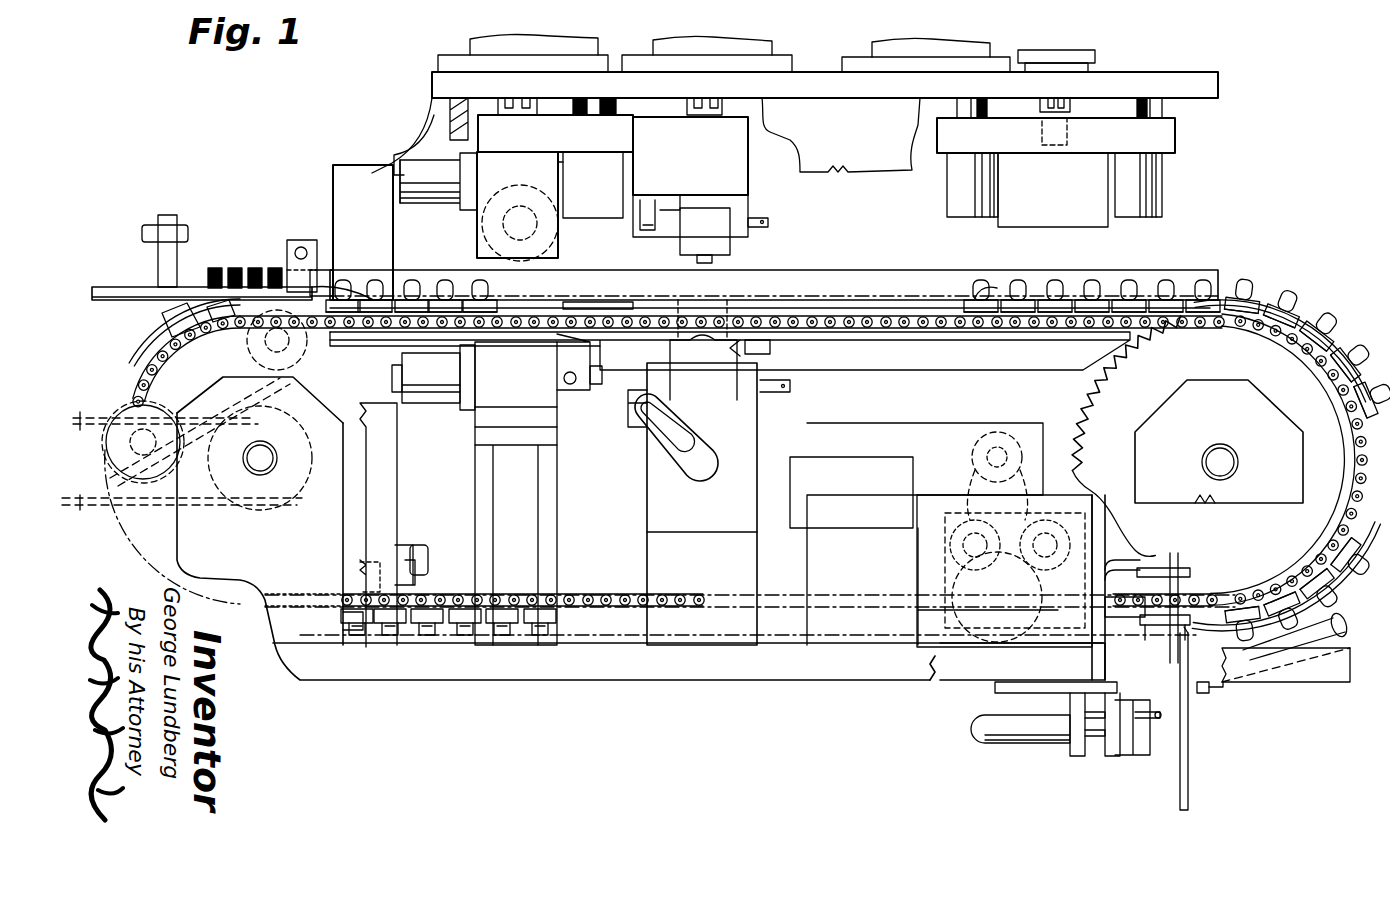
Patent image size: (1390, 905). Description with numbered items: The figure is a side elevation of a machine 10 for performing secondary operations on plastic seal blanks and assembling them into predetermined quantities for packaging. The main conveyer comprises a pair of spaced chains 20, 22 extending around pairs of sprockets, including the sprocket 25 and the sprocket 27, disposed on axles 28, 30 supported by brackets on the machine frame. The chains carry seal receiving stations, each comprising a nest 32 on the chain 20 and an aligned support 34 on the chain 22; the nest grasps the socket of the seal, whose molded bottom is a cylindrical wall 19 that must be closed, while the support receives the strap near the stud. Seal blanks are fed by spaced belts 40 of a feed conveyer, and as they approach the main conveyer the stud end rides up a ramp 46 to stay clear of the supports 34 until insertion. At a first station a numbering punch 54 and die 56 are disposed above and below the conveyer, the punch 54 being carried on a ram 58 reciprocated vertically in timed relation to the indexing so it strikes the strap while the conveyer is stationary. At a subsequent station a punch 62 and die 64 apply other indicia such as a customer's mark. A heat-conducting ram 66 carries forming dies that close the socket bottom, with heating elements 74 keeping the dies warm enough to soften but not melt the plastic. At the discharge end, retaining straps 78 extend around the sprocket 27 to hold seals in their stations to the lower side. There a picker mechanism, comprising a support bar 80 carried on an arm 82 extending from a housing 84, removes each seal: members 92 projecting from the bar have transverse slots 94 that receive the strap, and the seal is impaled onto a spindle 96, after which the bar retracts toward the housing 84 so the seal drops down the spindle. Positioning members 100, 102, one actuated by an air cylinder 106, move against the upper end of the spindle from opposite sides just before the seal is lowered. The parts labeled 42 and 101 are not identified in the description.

The machine 10 is at (726, 727).
The cylindrical wall 19 is at (212, 268).
The chain 20 is at (1050, 330).
The chain 22 is at (140, 340).
The sprocket 25 is at (355, 402).
The sprocket 27 is at (1235, 366).
The axle 28 is at (272, 470).
The axle 30 is at (1240, 432).
The nest 32 is at (1034, 294).
The support 34 is at (142, 330).
The belts 40 is at (136, 287).
The feed post 42 is at (96, 271).
The ramp 46 is at (189, 361).
The numbering punch 54 is at (556, 236).
The die 56 is at (569, 302).
The ram 58 is at (565, 146).
The punch 62 is at (722, 241).
The die 64 is at (768, 343).
The ram 66 is at (1150, 136).
The heating elements 74 is at (947, 182).
The retaining straps 78 is at (1267, 296).
The support bar 80 is at (1128, 618).
The arm 82 is at (1108, 557).
The housing 84 is at (1062, 484).
The members 92 is at (1160, 626).
The transverse slots 94 is at (1190, 600).
The spindle 96 is at (1188, 726).
The positioning member 100 is at (1183, 710).
The cylinder 101 is at (1030, 743).
The positioning member 102 is at (1210, 690).
The air cylinder 106 is at (1332, 618).